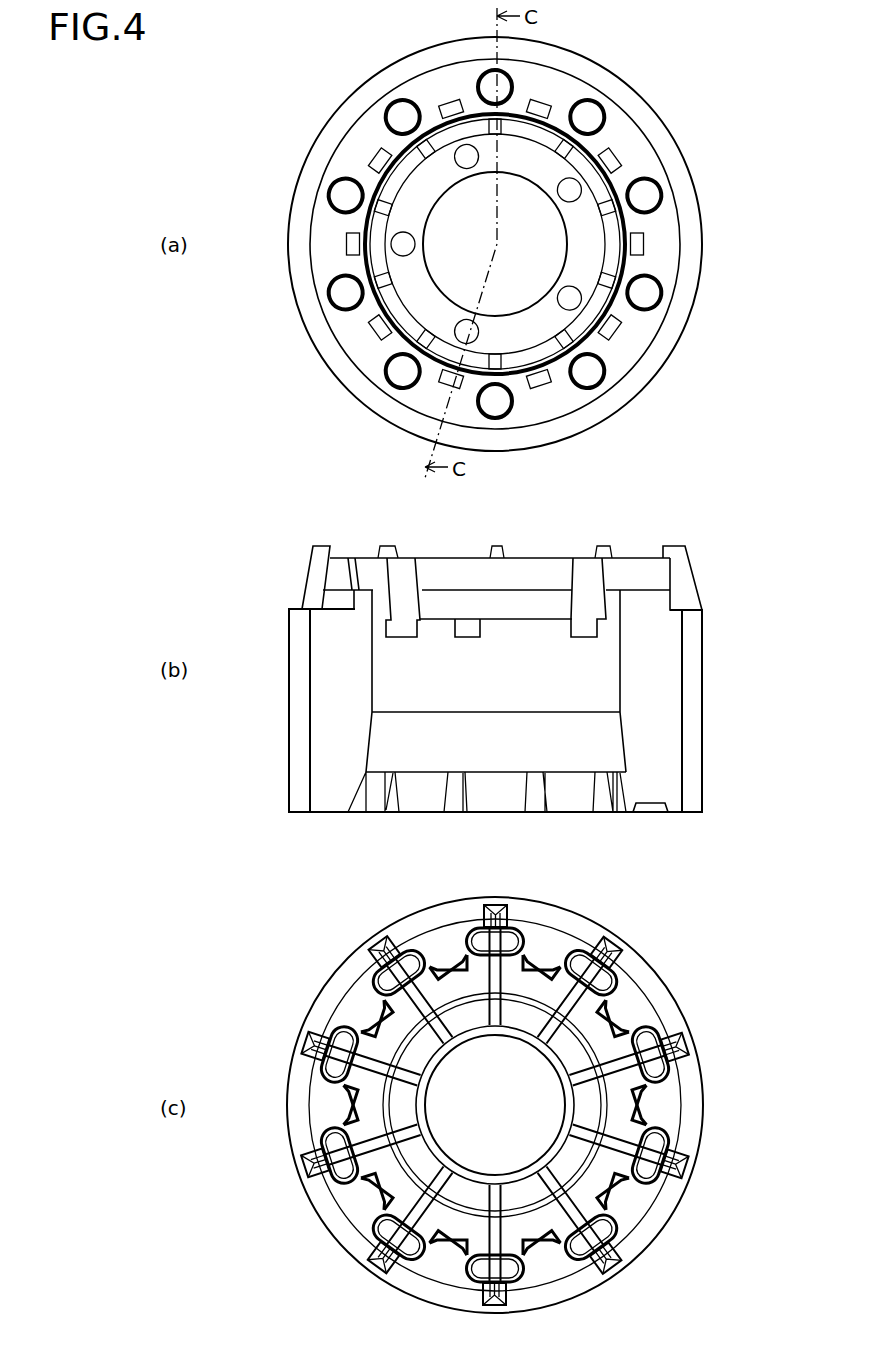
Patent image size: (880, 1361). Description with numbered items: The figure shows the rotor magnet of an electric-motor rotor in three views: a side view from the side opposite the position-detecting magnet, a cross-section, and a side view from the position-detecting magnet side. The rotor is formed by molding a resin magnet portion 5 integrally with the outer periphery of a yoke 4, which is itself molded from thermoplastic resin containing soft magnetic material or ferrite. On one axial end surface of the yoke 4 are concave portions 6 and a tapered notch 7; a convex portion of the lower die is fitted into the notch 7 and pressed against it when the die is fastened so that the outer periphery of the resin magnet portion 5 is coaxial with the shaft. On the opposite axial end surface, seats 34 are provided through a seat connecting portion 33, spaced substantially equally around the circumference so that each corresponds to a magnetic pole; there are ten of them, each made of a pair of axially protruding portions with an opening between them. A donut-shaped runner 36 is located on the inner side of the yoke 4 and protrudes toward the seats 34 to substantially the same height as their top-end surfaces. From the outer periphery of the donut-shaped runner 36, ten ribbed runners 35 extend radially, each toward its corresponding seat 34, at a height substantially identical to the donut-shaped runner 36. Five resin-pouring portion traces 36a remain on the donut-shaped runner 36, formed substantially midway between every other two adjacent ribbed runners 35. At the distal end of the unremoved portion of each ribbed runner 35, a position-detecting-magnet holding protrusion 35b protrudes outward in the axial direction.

The yoke 4 is at (645, 330).
The resin magnet portion 5 is at (692, 242).
The concave portions 6 is at (650, 193).
The tapered notch 7 is at (545, 108).
The seat connecting portion 33 is at (360, 598).
The seats 34 is at (660, 1180).
The ribbed runners 35 is at (412, 266).
The position-detecting-magnet holding protrusion 35b is at (684, 548).
The donut-shaped runner 36 is at (420, 295).
The resin-pouring portion traces 36a is at (568, 187).